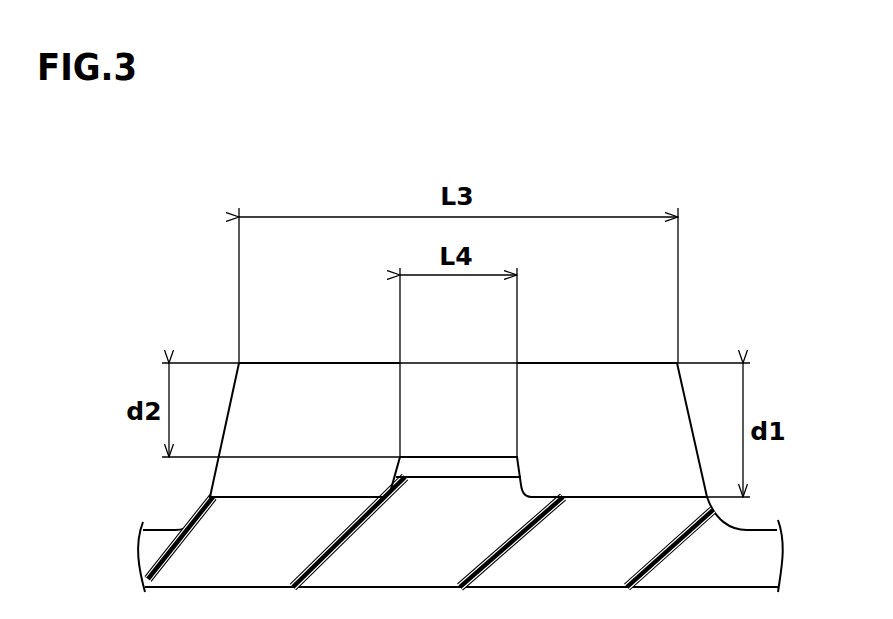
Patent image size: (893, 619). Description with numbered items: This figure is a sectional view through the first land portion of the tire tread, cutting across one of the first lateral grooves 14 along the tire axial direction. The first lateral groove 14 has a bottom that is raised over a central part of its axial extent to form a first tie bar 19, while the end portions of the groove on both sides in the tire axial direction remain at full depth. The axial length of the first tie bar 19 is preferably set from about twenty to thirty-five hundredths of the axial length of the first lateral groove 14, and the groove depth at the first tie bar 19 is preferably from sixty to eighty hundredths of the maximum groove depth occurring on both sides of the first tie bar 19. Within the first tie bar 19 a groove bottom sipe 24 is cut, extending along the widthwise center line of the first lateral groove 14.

The first lateral groove 14 is at (313, 403).
The first tie bar 19 is at (430, 455).
The groove bottom sipe 24 is at (482, 476).